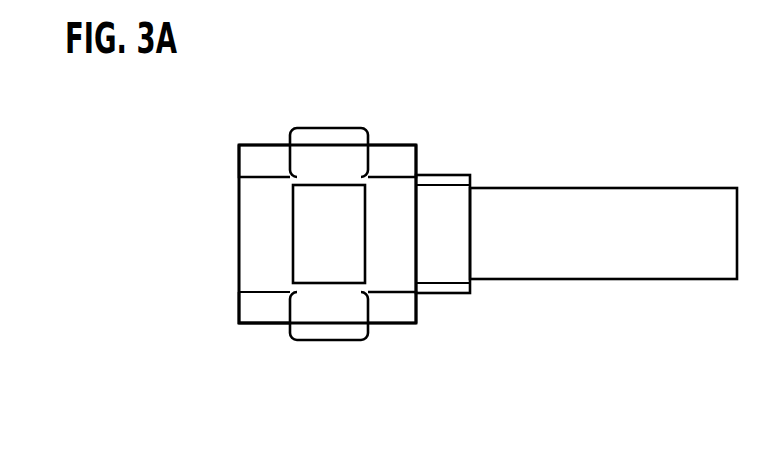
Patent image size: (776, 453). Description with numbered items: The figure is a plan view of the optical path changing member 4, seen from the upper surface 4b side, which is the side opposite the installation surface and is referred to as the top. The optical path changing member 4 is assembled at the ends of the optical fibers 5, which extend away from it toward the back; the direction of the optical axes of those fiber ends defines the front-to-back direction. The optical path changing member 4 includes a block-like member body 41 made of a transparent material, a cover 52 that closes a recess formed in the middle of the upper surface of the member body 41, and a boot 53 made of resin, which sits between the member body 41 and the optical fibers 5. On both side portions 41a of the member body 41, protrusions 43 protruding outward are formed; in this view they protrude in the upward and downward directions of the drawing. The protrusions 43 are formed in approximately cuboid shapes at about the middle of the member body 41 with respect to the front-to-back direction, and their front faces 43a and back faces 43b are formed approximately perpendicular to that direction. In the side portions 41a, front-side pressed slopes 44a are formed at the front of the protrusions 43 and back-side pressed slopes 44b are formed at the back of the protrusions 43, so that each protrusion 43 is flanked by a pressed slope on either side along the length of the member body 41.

The optical path changing member 4 is at (420, 116).
The upper surface 4b is at (255, 258).
The optical fibers 5 is at (585, 268).
The member body 41 is at (255, 207).
The side portions 41a is at (268, 142).
The protrusions 43 is at (325, 132).
The front face 43a is at (288, 162).
The back face 43b is at (368, 165).
The front-side pressed slopes 44a is at (255, 150).
The back-side pressed slopes 44b is at (388, 152).
The cover 52 is at (348, 231).
The boot 53 is at (450, 268).